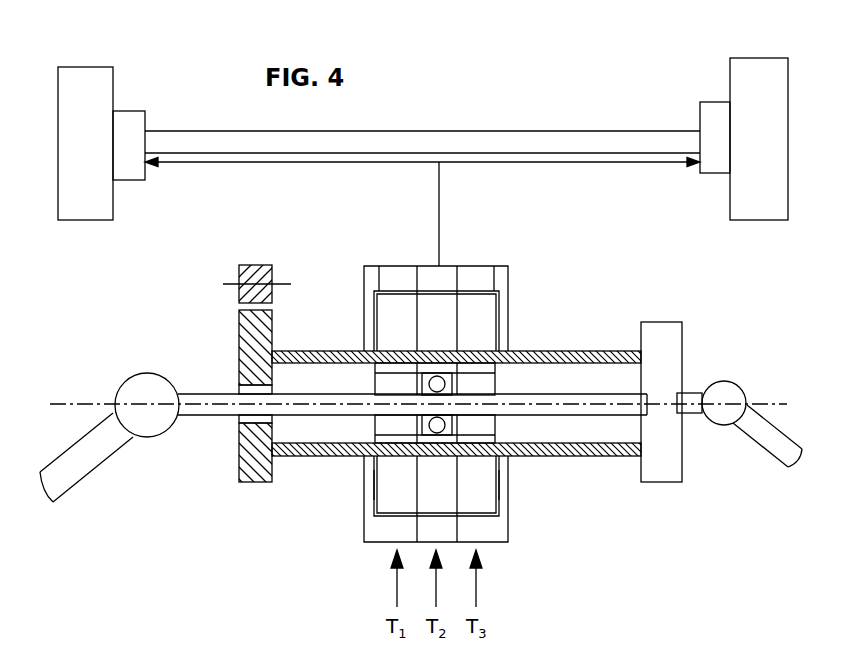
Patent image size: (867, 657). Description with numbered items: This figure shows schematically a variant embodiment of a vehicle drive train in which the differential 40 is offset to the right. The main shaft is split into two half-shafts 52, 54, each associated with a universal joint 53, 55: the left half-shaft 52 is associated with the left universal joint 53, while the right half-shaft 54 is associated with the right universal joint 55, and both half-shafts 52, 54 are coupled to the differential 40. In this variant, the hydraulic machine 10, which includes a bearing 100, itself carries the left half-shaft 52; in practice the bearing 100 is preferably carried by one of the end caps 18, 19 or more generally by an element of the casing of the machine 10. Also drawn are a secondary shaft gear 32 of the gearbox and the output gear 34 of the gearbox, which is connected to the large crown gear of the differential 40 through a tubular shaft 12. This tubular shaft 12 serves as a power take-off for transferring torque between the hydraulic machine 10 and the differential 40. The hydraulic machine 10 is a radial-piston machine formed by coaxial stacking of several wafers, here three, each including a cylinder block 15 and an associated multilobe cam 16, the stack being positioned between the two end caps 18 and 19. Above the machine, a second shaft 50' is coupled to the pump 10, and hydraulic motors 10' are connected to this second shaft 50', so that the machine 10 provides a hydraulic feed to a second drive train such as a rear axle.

The hydraulic motors 10' is at (423, 110).
The second shaft 50' is at (422, 151).
The hydraulic machine 10 is at (436, 372).
The tubular shaft 12 is at (578, 460).
The cylinder block 15 is at (392, 497).
The multilobe cam 16 is at (380, 281).
The end cap 18 is at (370, 483).
The end cap 19 is at (505, 503).
The secondary shaft gear 32 is at (255, 255).
The output gear 34 is at (253, 487).
The differential 40 is at (672, 335).
The half-shaft 52 is at (204, 412).
The universal joint 53 is at (130, 378).
The half-shaft 54 is at (697, 398).
The universal joint 55 is at (722, 415).
The bearing 100 is at (446, 373).